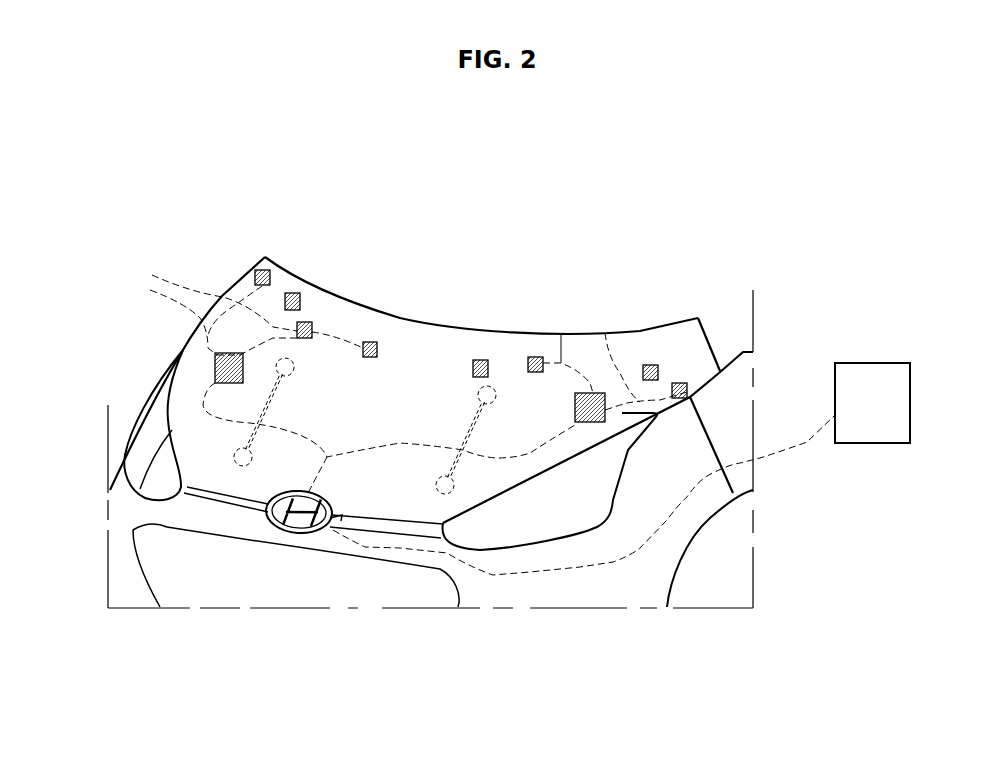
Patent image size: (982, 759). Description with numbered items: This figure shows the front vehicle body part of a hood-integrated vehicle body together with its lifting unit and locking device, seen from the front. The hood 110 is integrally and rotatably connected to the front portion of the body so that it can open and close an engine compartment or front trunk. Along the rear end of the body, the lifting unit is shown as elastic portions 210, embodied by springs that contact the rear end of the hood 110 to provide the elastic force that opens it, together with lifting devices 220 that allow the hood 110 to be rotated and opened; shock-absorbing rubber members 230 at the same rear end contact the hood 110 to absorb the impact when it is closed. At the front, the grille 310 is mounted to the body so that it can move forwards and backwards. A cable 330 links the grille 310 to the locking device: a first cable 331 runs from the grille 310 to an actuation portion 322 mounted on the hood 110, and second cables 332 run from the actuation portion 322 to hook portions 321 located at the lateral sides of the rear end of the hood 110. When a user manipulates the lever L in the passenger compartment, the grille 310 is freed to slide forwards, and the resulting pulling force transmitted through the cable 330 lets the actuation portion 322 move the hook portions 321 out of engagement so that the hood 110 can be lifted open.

The hood 110 is at (230, 238).
The elastic portion 210 is at (480, 360).
The lifting device 220 is at (243, 466).
The shock-absorbing rubber member 230 is at (292, 293).
The grille 310 is at (302, 533).
The hook portion 321 is at (263, 270).
The actuation portion 322 is at (215, 370).
The cable 330 is at (452, 455).
The first cable 331 is at (250, 425).
The second cable 332 is at (150, 290).
The lever L is at (868, 374).